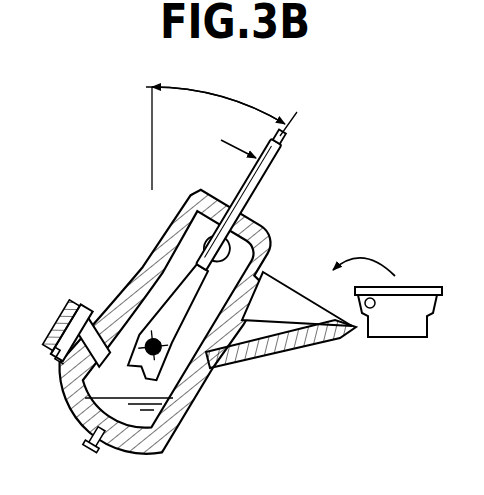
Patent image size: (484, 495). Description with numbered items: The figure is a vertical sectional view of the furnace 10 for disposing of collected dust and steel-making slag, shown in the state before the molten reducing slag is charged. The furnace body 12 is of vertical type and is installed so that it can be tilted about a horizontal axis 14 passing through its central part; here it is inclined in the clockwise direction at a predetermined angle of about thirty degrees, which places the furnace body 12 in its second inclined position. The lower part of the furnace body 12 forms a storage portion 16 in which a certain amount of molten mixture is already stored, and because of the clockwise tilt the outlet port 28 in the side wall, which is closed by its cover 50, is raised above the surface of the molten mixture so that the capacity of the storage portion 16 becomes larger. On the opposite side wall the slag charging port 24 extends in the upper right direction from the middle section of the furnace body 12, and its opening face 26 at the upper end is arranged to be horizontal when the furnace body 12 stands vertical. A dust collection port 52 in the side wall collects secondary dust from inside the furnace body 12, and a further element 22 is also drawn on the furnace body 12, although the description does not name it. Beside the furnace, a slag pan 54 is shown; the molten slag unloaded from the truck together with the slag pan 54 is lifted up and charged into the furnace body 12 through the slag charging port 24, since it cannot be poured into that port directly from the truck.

The furnace 10 is at (345, 214).
The furnace body 12 is at (217, 395).
The horizontal axis 14 is at (150, 345).
The storage portion 16 is at (158, 413).
The needle / pin 22 is at (268, 172).
The slag charging port 24 is at (282, 338).
The opening face 26 is at (288, 300).
The outlet port 28 is at (66, 358).
The cover 50 is at (62, 332).
The dust collection port 52 is at (207, 240).
The slag pan 54 is at (400, 325).